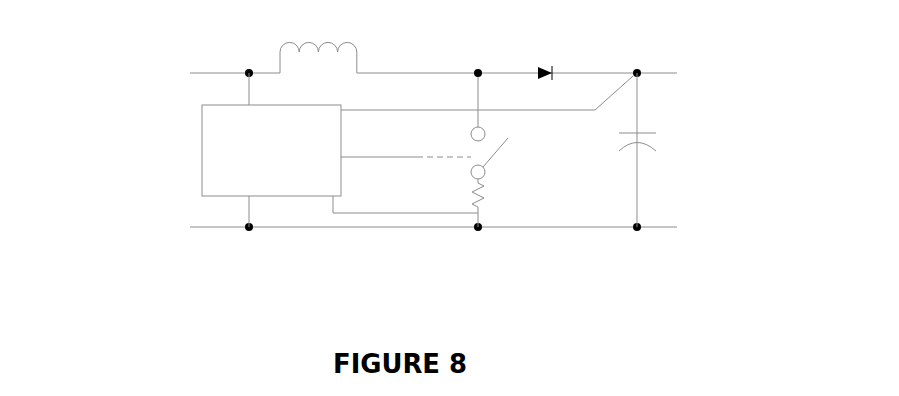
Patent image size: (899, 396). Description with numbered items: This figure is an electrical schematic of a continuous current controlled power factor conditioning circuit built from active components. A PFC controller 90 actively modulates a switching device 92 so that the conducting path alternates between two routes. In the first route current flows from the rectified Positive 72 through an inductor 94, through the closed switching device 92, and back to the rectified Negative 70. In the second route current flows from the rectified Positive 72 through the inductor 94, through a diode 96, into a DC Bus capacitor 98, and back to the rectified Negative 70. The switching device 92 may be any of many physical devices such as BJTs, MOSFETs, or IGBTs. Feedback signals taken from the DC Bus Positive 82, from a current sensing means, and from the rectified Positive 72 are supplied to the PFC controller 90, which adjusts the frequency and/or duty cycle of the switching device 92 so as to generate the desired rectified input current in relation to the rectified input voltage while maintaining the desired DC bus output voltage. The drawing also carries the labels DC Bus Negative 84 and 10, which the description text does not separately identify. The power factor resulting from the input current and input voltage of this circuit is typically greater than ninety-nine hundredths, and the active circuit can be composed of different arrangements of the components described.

The resistive load / lamp 10 is at (458, 189).
The rectified Negative 70 is at (79, 271).
The rectified Positive 72 is at (81, 53).
The DC Bus Positive 82 is at (750, 44).
The DC bus negative 84 is at (750, 265).
The PFC controller 90 is at (296, 213).
The switching device 92 is at (514, 160).
The inductor 94 is at (326, 40).
The diode 96 is at (549, 55).
The DC Bus capacitor 98 is at (666, 150).